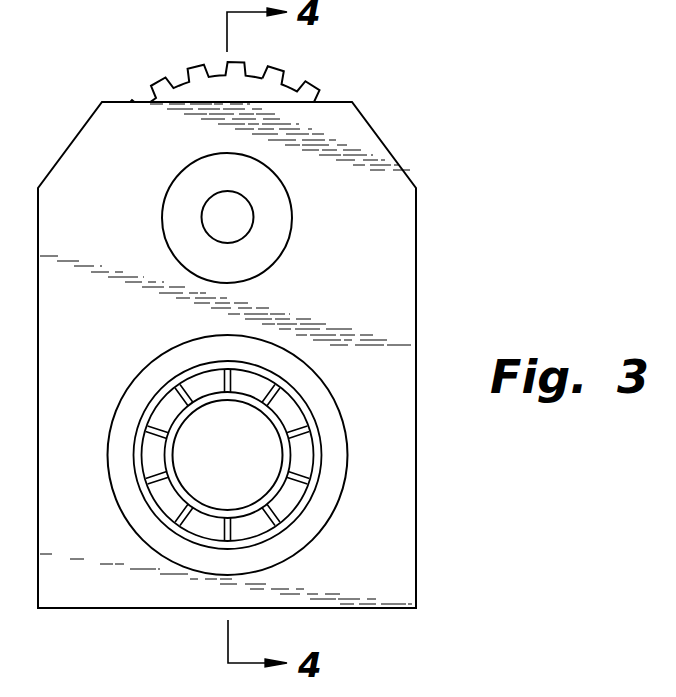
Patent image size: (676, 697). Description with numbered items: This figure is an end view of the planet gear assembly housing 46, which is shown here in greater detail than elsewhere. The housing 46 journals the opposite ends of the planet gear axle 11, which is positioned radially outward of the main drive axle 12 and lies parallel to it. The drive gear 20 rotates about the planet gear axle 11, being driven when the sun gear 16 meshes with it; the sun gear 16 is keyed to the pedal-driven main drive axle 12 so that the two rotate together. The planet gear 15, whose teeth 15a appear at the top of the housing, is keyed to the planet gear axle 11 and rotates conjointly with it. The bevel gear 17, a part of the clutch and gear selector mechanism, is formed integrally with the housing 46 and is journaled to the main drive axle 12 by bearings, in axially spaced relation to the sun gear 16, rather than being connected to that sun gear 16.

The planet gear axle 11 is at (253, 226).
The main drive axle 12 is at (245, 467).
The planet gear 15 is at (255, 90).
The teeth 15a is at (283, 71).
The sun gear 16 is at (328, 423).
The bevel gear 17 is at (312, 467).
The drive gear 20 is at (177, 202).
The housing 46 is at (102, 366).